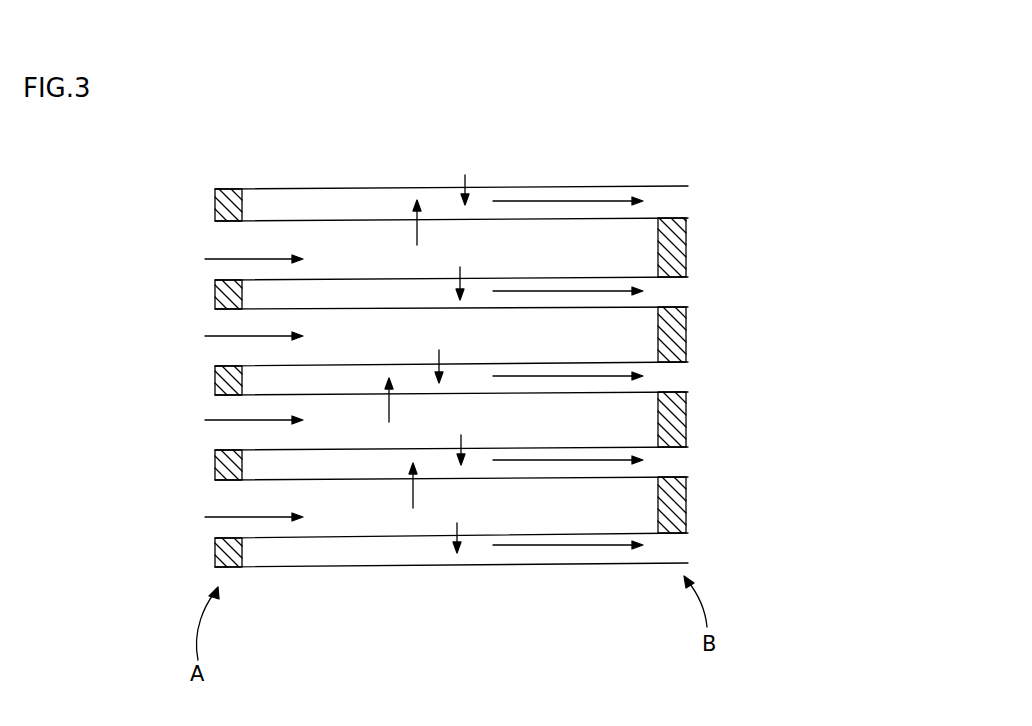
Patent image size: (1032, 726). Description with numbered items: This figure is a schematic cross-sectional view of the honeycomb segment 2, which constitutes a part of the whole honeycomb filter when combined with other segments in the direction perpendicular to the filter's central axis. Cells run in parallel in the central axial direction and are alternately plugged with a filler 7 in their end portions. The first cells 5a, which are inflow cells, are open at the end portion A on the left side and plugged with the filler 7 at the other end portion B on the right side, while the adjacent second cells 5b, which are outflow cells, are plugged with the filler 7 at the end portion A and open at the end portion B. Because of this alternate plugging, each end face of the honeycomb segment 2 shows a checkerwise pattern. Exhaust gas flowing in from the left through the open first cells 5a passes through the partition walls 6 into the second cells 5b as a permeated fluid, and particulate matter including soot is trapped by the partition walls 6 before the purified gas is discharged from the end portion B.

The honeycomb segment 2 is at (628, 147).
The first cells 5a is at (379, 433).
The second cells 5b is at (445, 203).
The partition walls 6 is at (367, 217).
The filler 7 is at (227, 208).